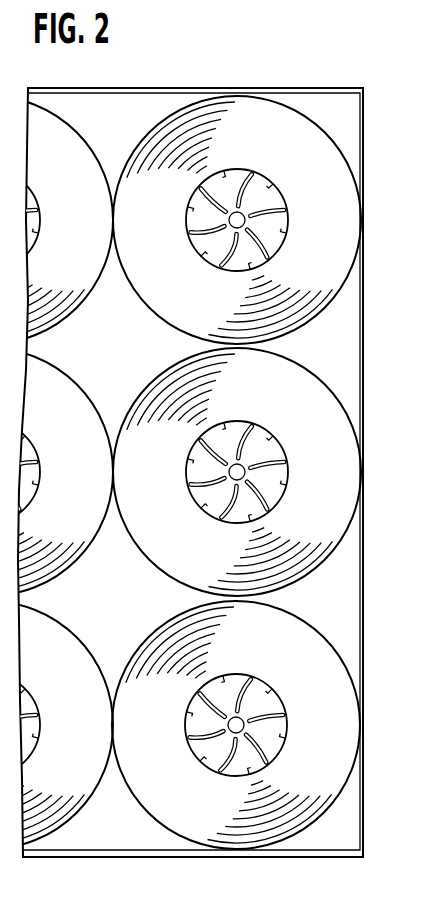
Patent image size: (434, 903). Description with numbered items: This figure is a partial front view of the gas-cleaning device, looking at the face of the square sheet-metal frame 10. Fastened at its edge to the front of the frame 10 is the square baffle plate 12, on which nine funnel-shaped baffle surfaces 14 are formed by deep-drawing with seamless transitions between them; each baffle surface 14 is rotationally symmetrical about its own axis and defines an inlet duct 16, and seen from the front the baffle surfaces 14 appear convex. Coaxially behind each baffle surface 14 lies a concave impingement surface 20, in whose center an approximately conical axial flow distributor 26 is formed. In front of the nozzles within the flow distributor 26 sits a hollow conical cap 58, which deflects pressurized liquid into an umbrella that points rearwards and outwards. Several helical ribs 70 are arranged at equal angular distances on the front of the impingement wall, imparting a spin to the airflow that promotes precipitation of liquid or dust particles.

The frame 10 is at (364, 108).
The baffle plate 12 is at (340, 353).
The baffle surface 14 is at (345, 263).
The inlet duct 16 is at (273, 272).
The impingement surface 20 is at (273, 447).
The flow distributor 26 is at (283, 497).
The cap 58 is at (260, 513).
The helical ribs 70 is at (280, 705).